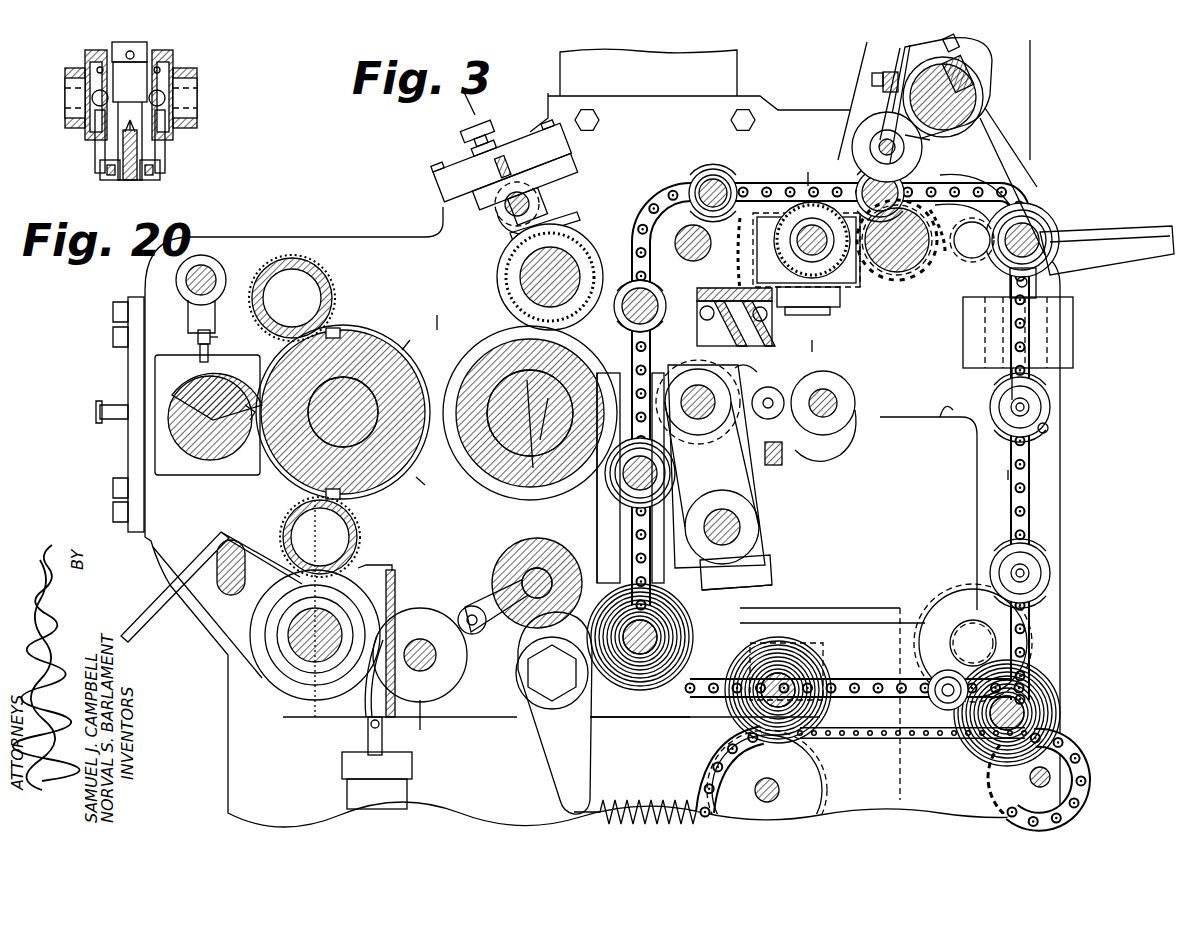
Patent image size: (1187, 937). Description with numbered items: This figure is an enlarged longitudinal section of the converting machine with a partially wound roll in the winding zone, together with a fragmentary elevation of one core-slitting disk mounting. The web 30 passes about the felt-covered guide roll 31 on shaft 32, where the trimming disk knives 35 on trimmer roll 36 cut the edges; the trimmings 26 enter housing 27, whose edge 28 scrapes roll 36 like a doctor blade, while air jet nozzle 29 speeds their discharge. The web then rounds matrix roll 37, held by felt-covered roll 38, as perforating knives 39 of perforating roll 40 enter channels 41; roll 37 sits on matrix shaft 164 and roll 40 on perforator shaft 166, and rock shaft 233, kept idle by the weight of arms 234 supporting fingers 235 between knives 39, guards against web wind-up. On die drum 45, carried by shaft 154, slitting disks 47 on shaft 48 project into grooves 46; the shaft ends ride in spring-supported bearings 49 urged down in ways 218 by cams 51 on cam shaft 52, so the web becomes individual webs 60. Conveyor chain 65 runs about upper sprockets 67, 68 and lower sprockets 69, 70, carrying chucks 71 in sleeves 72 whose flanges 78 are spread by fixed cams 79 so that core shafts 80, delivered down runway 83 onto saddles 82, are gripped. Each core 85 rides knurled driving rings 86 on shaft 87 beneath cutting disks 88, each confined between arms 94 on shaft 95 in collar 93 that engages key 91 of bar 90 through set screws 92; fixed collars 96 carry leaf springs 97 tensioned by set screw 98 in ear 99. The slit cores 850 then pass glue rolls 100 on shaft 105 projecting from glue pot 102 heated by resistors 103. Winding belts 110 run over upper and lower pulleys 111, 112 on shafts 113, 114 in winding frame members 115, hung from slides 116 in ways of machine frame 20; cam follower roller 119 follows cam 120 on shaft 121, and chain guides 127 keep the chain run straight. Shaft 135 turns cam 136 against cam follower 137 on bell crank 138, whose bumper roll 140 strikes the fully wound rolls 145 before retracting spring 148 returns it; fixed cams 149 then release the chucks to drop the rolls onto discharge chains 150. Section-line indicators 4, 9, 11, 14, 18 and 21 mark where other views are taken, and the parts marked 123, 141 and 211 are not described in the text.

In FIG. 3, the section line 4 is at (1034, 55).
In FIG. 3, the axis line 9 is at (437, 322).
In FIG. 3, the section line 11 is at (467, 103).
In FIG. 3, the direction arrow 14 is at (809, 178).
In FIG. 3, the axis line 18 is at (317, 523).
In FIG. 3, the machine frame 20 is at (866, 33).
In FIG. 3, the chain guide 21 is at (1010, 371).
In FIG. 3, the trimmings 26 is at (413, 696).
In FIG. 3, the housing 27 is at (383, 590).
In FIG. 3, the edge 28 is at (367, 700).
In FIG. 3, the air jet nozzle 29 is at (377, 740).
In FIG. 3, the web 30 is at (455, 345).
In FIG. 3, the felt-covered guide roll 31 is at (290, 510).
In FIG. 3, the shaft 32 is at (340, 540).
In FIG. 3, the trimming disk knives 35 is at (272, 668).
In FIG. 3, the trimmer roll 36 is at (290, 680).
In FIG. 3, the matrix roll 37 is at (363, 340).
In FIG. 3, the felt-covered roll 38 is at (325, 280).
In FIG. 3, the perforating knives 39 is at (175, 367).
In FIG. 3, the perforating roll 40 is at (177, 427).
In FIG. 3, the channels 41 is at (333, 330).
In FIG. 3, the die drum 45 is at (480, 457).
In FIG. 3, the grooves 46 is at (485, 478).
In FIG. 3, the slitting disks 47 is at (497, 294).
In FIG. 3, the shaft 48 is at (522, 273).
In FIG. 3, the spring-supported bearings 49 is at (565, 213).
In FIG. 3, the cams 51 is at (482, 234).
In FIG. 3, the cam shaft 52 is at (530, 195).
In FIG. 3, the individual webs 60 is at (583, 363).
In FIG. 3, the conveyor chain 65 is at (668, 205).
In FIG. 3, the upper sprocket 67 is at (983, 213).
In FIG. 3, the upper sprocket 68 is at (693, 225).
In FIG. 3, the lower sprocket 69 is at (690, 705).
In FIG. 3, the lower sprocket 70 is at (953, 595).
In FIG. 3, the chucks 71 is at (1028, 407).
In FIG. 3, the sleeve 72 is at (1048, 427).
In FIG. 3, the flanges 78 is at (1058, 248).
In FIG. 3, the fixed cams 79 is at (1053, 340).
In FIG. 3, the core shaft 80 is at (757, 703).
In FIG. 3, the saddles 82 is at (1040, 297).
In FIG. 3, the inclined runway 83 is at (1145, 232).
In FIG. 3, the core 85 is at (900, 185).
In FIG. 3, the knurled driving rings 86 is at (903, 262).
In FIG. 3, the shaft 87 is at (917, 263).
In FIG. 20, the core slitting disks 88 is at (130, 183).
In FIG. 3, the core slitting disks 88 is at (860, 133).
In FIG. 20, the supporting bar 90 is at (200, 113).
In FIG. 3, the supporting bar 90 is at (972, 113).
In FIG. 3, the longitudinal key 91 is at (957, 87).
In FIG. 20, the set screws 92 is at (131, 47).
In FIG. 3, the set screws 92 is at (947, 43).
In FIG. 20, the collar 93 is at (143, 67).
In FIG. 3, the collar 93 is at (970, 120).
In FIG. 20, the arms 94 is at (117, 173).
In FIG. 3, the arms 94 is at (925, 147).
In FIG. 20, the shaft 95 is at (97, 170).
In FIG. 3, the shaft 95 is at (895, 147).
In FIG. 20, the collars 96 is at (93, 47).
In FIG. 20, the leaf spring 97 is at (93, 150).
In FIG. 3, the leaf spring 97 is at (880, 100).
In FIG. 20, the set screw 98 is at (93, 95).
In FIG. 3, the set screw 98 is at (880, 72).
In FIG. 20, the overhanging ear 99 is at (93, 107).
In FIG. 3, the overhanging ear 99 is at (873, 87).
In FIG. 3, the glue rolls 100 is at (805, 222).
In FIG. 3, the glue pot 102 is at (858, 300).
In FIG. 3, the resistors 103 is at (808, 317).
In FIG. 3, the shaft 105 is at (797, 247).
In FIG. 3, the winding belts 110 is at (757, 492).
In FIG. 3, the upper pulleys 111 is at (757, 400).
In FIG. 3, the lower pulleys 112 is at (743, 540).
In FIG. 3, the upper winding belt shaft 113 is at (747, 370).
In FIG. 3, the lower winding belt shaft 114 is at (727, 522).
In FIG. 3, the winding frame members 115 is at (760, 560).
In FIG. 3, the slides 116 is at (677, 368).
In FIG. 3, the cam follower roller 119 is at (787, 393).
In FIG. 3, the cam 120 is at (848, 390).
In FIG. 3, the shaft 121 is at (840, 404).
In FIG. 3, the hook 123 is at (950, 405).
In FIG. 3, the chain guides 127 is at (620, 372).
In FIG. 3, the shaft 135 is at (440, 695).
In FIG. 3, the cam 136 is at (457, 668).
In FIG. 3, the cam follower 137 is at (465, 608).
In FIG. 3, the bell crank 138 is at (497, 620).
In FIG. 3, the bumper roll 140 is at (507, 572).
In FIG. 3, the hub 141 is at (537, 583).
In FIG. 3, the fully wound rolls 145 is at (620, 677).
In FIG. 3, the retracting spring 148 is at (625, 797).
In FIG. 3, the fixed cams 149 is at (820, 650).
In FIG. 3, the discharge conveyor chains 150 is at (928, 737).
In FIG. 3, the shaft 154 is at (540, 440).
In FIG. 3, the perforator matrix shaft 164 is at (345, 412).
In FIG. 3, the perforator shaft 166 is at (210, 445).
In FIG. 3, the cover 211 is at (700, 73).
In FIG. 3, the ways 218 is at (545, 213).
In FIG. 3, the rock shaft 233 is at (207, 266).
In FIG. 3, the arms 234 is at (212, 320).
In FIG. 3, the fingers 235 is at (208, 352).
In FIG. 3, the slit cores 850 is at (713, 180).